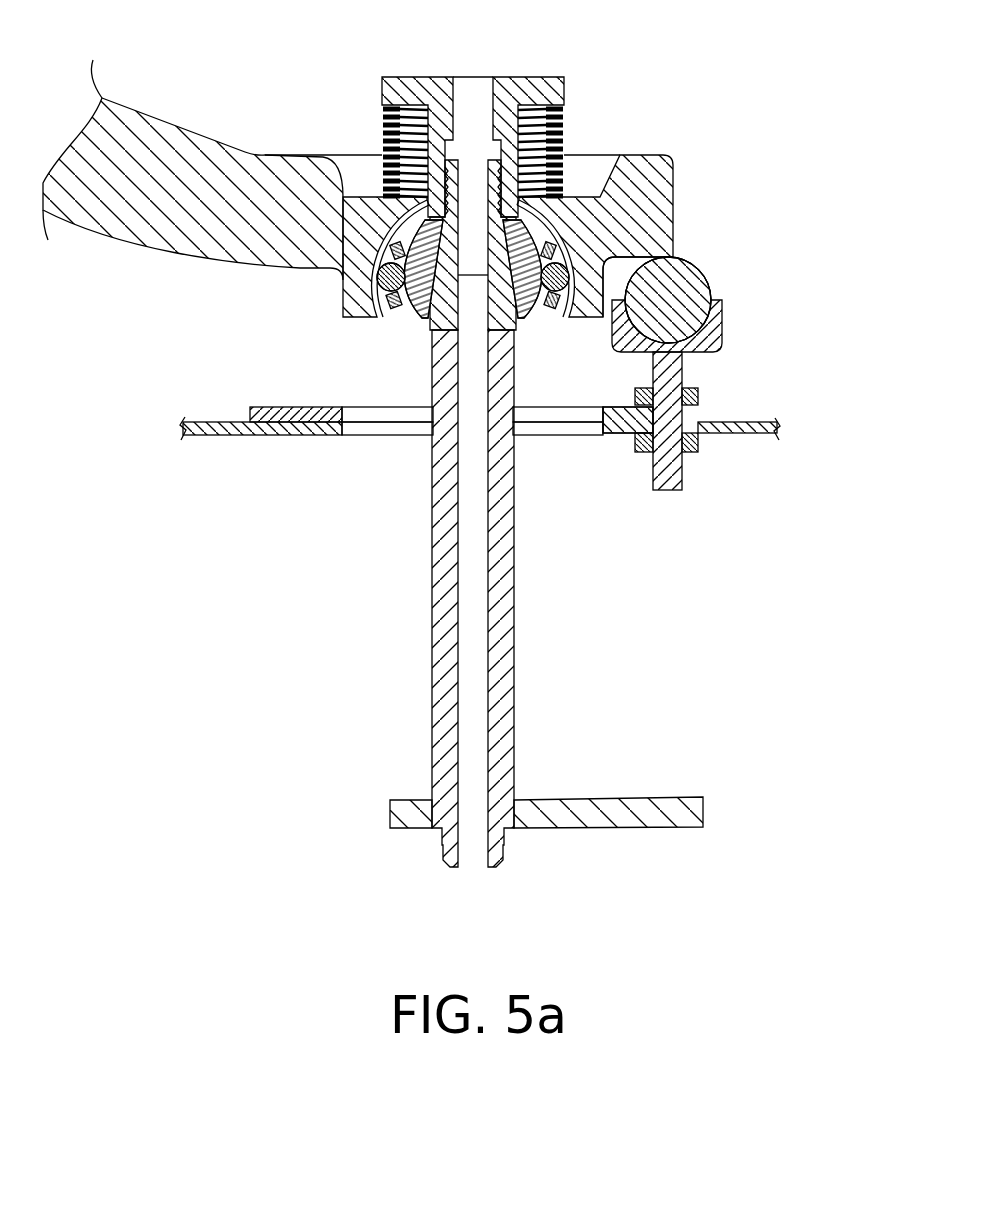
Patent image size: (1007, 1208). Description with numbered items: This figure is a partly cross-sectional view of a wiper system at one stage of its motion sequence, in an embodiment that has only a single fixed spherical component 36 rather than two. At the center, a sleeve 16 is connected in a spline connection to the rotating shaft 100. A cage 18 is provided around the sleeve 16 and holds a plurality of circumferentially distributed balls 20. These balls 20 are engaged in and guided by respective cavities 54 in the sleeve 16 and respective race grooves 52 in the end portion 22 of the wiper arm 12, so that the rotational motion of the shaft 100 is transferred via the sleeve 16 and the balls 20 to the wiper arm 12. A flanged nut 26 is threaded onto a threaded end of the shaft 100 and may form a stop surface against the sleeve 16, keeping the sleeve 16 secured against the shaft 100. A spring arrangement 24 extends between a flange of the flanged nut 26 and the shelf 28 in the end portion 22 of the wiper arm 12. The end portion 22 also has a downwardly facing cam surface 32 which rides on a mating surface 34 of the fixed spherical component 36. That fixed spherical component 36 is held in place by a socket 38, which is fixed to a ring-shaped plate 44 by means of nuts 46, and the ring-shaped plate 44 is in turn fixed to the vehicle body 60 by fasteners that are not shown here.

The wiper arm 12 is at (178, 197).
The sleeve 16 is at (535, 322).
The cage 18 is at (395, 313).
The balls 20 is at (378, 287).
The end portion 22 is at (647, 205).
The spring arrangement 24 is at (562, 142).
The flanged nut 26 is at (515, 92).
The shelf 28 is at (363, 197).
The cam surface 32 is at (630, 273).
The mating surface 34 is at (688, 263).
The fixed spherical component 36 is at (668, 293).
The socket 38 is at (703, 342).
The ring-shaped plate 44 is at (262, 407).
The nuts 46 is at (702, 445).
The race grooves 52 is at (390, 318).
The cavities 54 is at (415, 318).
The vehicle body 60 is at (747, 422).
The rotating shaft 100 is at (432, 558).